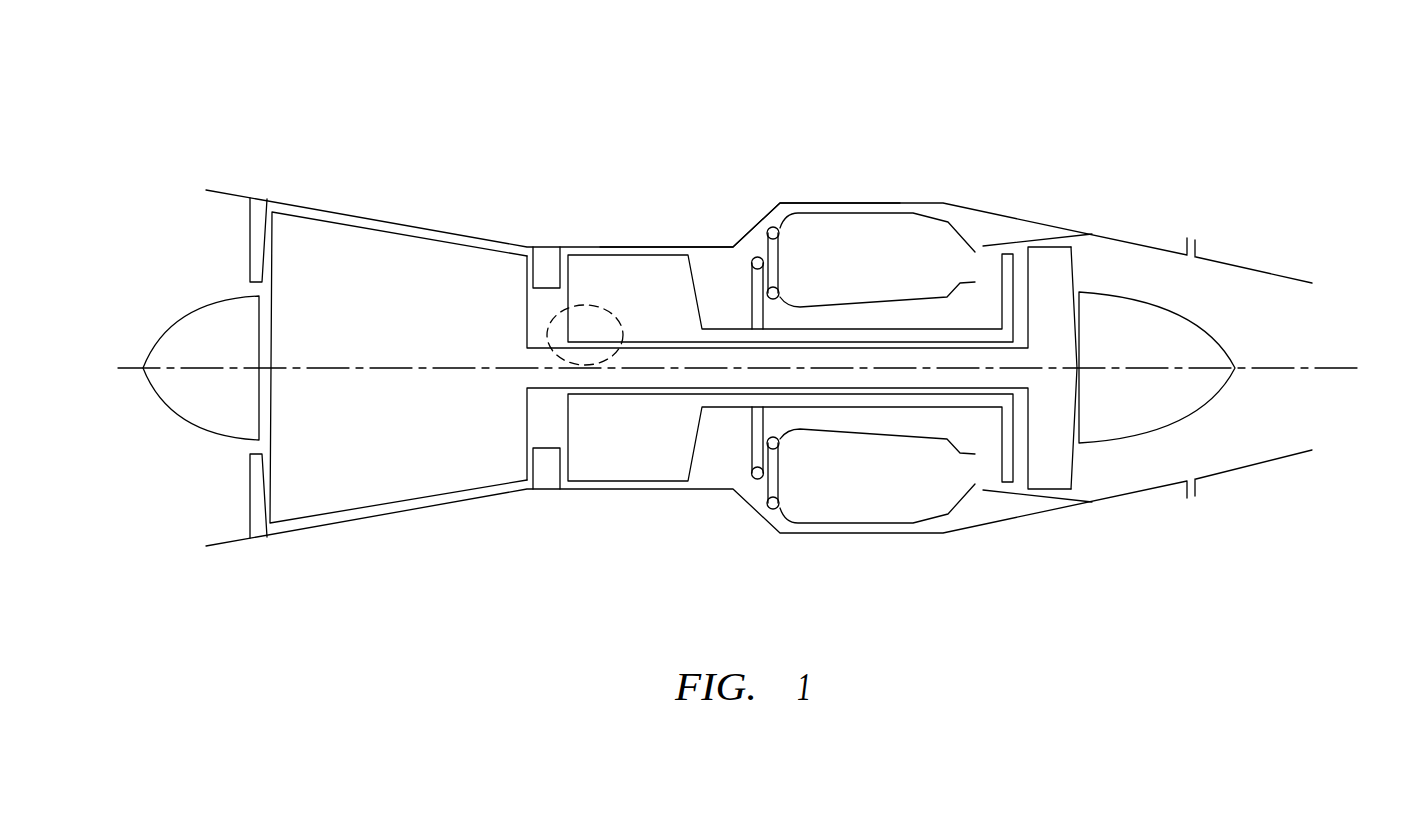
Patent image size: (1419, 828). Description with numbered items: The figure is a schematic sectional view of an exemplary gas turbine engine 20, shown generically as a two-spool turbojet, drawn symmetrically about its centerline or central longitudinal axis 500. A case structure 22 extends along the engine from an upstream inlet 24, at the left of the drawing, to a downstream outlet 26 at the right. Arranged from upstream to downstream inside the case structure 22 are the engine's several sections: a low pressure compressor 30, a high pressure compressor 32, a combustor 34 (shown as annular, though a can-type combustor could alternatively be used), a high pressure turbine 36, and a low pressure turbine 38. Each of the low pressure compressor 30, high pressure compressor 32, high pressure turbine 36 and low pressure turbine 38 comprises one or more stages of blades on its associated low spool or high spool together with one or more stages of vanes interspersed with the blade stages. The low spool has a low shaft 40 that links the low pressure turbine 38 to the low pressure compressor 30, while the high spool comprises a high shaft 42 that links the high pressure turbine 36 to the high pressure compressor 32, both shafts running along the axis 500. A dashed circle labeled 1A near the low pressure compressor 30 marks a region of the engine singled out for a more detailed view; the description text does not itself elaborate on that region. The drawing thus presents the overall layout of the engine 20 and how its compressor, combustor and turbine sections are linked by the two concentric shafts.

The gas turbine engine 20 is at (934, 122).
The case structure 22 is at (725, 246).
The upstream inlet 24 is at (196, 247).
The downstream outlet 26 is at (1336, 310).
The low pressure compressor 30 is at (388, 484).
The high pressure compressor 32 is at (615, 470).
The combustor 34 is at (865, 510).
The high pressure turbine 36 is at (1024, 242).
The low pressure turbine 38 is at (1062, 262).
The low shaft 40 is at (770, 362).
The high shaft 42 is at (727, 333).
The central longitudinal axis 500 is at (1342, 370).
The detail region 1A is at (548, 326).